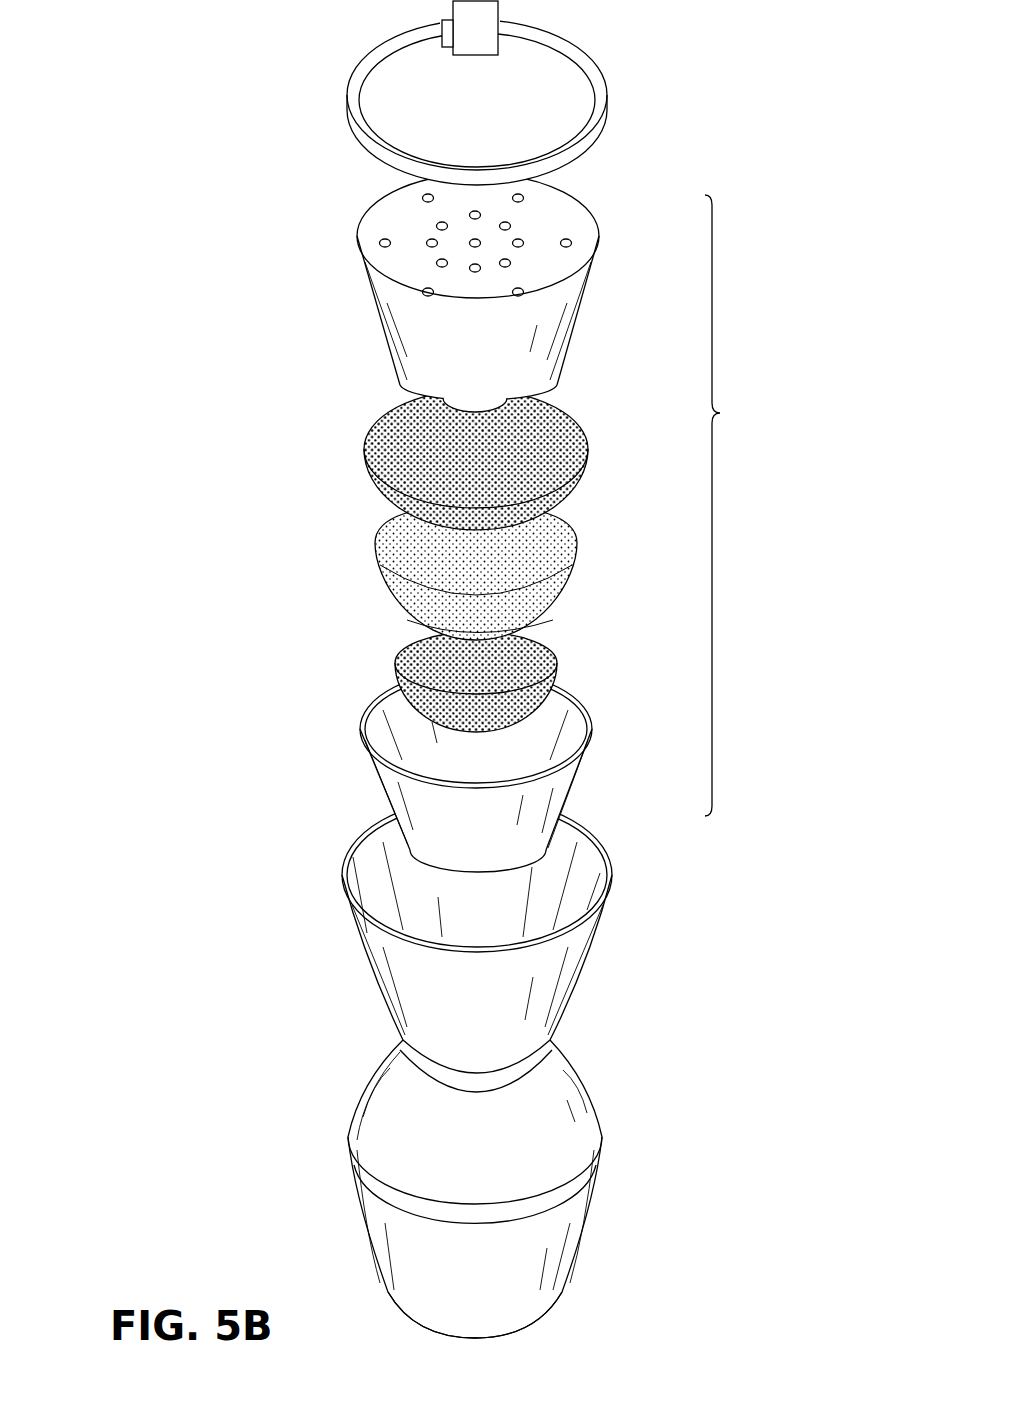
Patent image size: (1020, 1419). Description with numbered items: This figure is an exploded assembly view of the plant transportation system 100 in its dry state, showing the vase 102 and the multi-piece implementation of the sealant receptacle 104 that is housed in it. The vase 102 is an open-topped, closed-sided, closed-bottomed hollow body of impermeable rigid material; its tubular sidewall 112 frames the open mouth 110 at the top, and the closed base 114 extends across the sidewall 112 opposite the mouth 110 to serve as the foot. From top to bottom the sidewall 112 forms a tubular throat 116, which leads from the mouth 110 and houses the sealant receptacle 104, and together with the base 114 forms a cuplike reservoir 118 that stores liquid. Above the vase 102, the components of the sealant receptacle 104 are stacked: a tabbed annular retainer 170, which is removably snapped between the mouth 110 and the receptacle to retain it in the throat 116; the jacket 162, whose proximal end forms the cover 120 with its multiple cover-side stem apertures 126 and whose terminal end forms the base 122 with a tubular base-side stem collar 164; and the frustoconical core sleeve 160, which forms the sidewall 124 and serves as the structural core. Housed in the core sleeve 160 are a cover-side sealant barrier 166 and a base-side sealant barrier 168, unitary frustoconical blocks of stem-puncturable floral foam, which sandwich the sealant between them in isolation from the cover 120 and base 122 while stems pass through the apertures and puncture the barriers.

The plant transportation system 100 is at (549, 1068).
The vase 102 is at (549, 919).
The sealant receptacle 104 is at (735, 505).
The mouth 110 is at (577, 870).
The sidewall 112 is at (572, 987).
The base 114 is at (532, 1327).
The throat 116 is at (582, 957).
The reservoir 118 is at (602, 1146).
The cover 120 is at (412, 286).
The base 122 is at (420, 384).
The sidewall 124 is at (418, 771).
The cover-side stem apertures 126 is at (380, 237).
The core sleeve 160 is at (380, 796).
The jacket 162 is at (376, 310).
The base-side stem collar 164 is at (440, 410).
The cover-side sealant barrier 166 is at (370, 484).
The base-side sealant barrier 168 is at (397, 703).
The retainer 170 is at (358, 68).
The element sealant is at (400, 601).